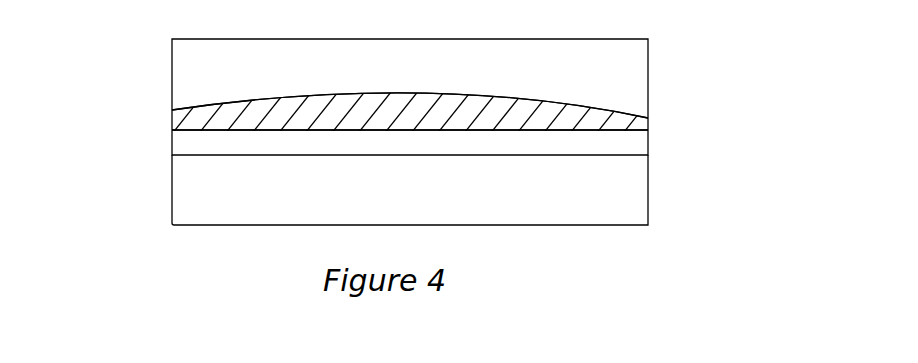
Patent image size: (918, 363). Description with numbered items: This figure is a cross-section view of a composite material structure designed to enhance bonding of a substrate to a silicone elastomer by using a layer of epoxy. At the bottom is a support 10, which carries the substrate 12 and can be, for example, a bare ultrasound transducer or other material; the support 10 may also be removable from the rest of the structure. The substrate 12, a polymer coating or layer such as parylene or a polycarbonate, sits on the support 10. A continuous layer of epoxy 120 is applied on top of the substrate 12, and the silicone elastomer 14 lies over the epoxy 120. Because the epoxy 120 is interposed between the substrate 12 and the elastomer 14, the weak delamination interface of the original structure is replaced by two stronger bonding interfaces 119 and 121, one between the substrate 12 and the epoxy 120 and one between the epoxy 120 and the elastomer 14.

The elastomer 14 is at (612, 71).
The layer of epoxy 120 is at (574, 117).
The bonding interface 121 is at (210, 108).
The bonding interface 119 is at (206, 139).
The substrate 12 is at (625, 143).
The support 10 is at (628, 208).